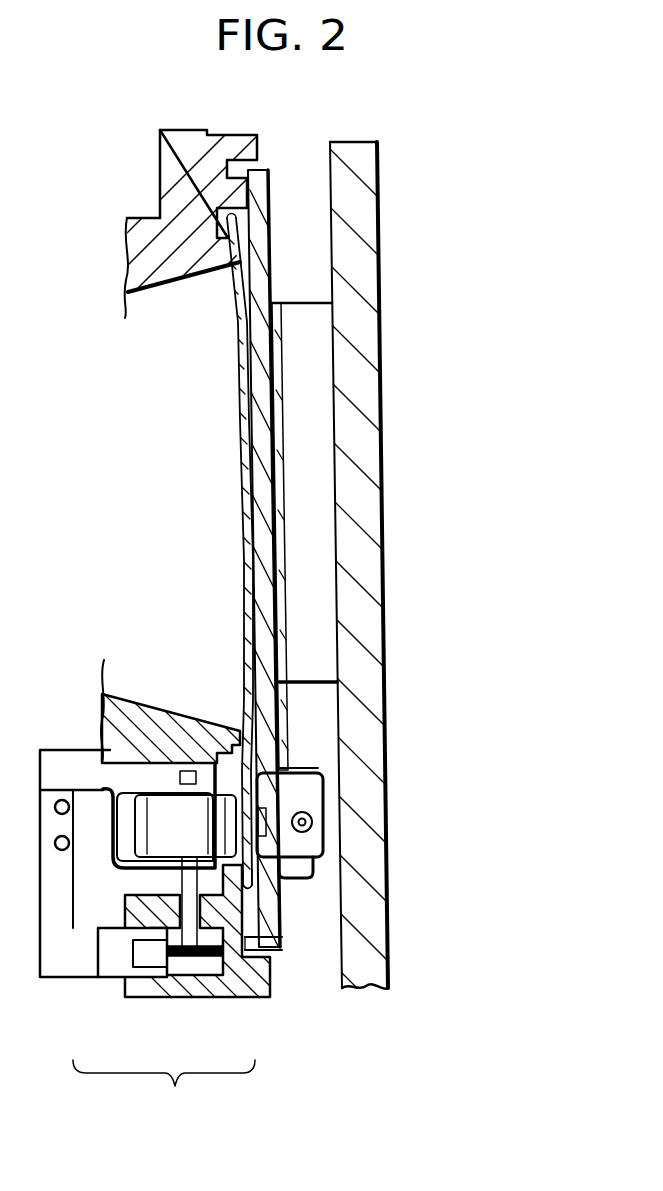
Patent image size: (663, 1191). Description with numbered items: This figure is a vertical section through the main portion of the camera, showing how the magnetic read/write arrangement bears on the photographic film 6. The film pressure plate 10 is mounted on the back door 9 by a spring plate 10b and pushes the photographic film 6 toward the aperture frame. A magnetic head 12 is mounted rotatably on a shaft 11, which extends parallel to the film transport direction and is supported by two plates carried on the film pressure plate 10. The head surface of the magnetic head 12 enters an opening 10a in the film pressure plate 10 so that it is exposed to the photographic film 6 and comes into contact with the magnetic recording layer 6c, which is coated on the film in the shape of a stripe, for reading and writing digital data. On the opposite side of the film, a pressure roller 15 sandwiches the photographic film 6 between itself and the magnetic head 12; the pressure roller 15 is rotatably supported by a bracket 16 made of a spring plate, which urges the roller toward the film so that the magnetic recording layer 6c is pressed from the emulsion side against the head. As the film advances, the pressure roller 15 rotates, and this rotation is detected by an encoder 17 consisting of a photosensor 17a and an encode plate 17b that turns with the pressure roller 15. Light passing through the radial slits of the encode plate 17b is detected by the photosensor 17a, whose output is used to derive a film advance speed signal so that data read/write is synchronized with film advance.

The back door 9 is at (385, 191).
The film pressure plate 10 is at (270, 253).
The opening 10a is at (292, 779).
The spring plate 10b is at (317, 486).
The photographic film 6 is at (245, 383).
The magnetic recording layer 6c is at (300, 868).
The shaft 11 is at (313, 818).
The magnetic head 12 is at (318, 845).
The pressure roller 15 is at (161, 805).
The bracket 16 is at (89, 806).
The encoder 17 is at (195, 1110).
The photosensor 17a is at (113, 963).
The encode plate 17b is at (217, 998).